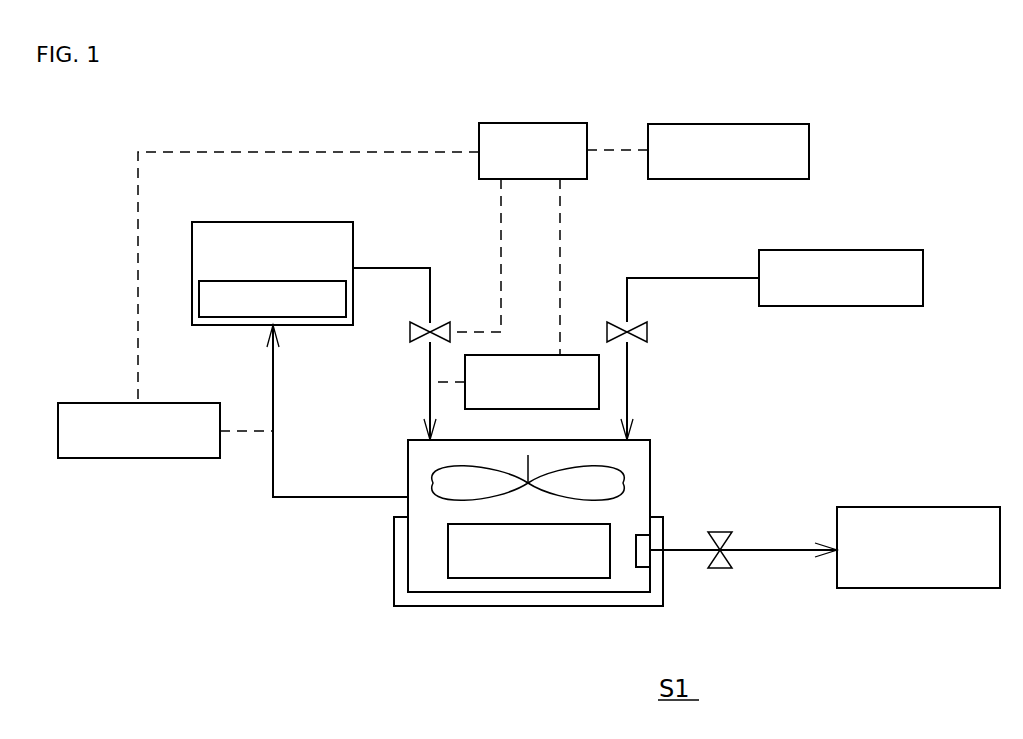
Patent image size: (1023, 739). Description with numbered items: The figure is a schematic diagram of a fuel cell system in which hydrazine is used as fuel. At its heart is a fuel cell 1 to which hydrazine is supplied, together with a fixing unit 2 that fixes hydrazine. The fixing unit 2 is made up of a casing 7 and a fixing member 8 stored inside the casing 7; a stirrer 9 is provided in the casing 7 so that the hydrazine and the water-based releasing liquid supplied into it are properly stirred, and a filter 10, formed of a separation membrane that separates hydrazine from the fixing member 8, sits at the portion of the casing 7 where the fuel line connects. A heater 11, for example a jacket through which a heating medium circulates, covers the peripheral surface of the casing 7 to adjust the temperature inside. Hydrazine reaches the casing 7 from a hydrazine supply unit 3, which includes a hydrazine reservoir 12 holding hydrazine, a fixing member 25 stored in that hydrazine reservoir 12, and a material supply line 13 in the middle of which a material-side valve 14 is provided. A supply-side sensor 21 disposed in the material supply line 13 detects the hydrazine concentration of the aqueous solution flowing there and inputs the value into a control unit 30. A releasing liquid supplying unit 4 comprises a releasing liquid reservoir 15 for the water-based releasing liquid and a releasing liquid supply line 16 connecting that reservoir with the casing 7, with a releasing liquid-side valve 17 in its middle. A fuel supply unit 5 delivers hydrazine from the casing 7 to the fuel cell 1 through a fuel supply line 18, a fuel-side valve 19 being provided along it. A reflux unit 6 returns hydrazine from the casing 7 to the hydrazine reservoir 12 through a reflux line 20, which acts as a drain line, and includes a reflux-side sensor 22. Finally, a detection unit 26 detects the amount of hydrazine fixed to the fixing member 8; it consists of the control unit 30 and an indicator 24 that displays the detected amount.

The fuel cell 1 is at (915, 588).
The fixing unit 2 is at (519, 559).
The hydrazine supply unit 3 is at (397, 315).
The releasing liquid supplying unit 4 is at (683, 320).
The fuel supply unit 5 is at (743, 547).
The reflux unit 6 is at (307, 440).
The casing 7 is at (408, 460).
The fixing member 8 is at (563, 578).
The stirrer 9 is at (623, 483).
The filter 10 is at (641, 567).
The heater 11 is at (448, 606).
The hydrazine reservoir 12 is at (272, 268).
The material supply line 13 is at (430, 397).
The material-side valve 14 is at (410, 333).
The releasing liquid reservoir 15 is at (923, 278).
The releasing liquid supply line 16 is at (708, 278).
The releasing liquid-side valve 17 is at (647, 332).
The fuel supply line 18 is at (790, 553).
The fuel-side valve 19 is at (720, 532).
The reflux line 20 is at (336, 498).
The supply-side sensor 21 is at (525, 355).
The reflux-side sensor 22 is at (100, 458).
The indicator 24 is at (757, 124).
The fixing member 25 is at (220, 317).
The detection unit 26 is at (617, 132).
The control unit 30 is at (533, 123).